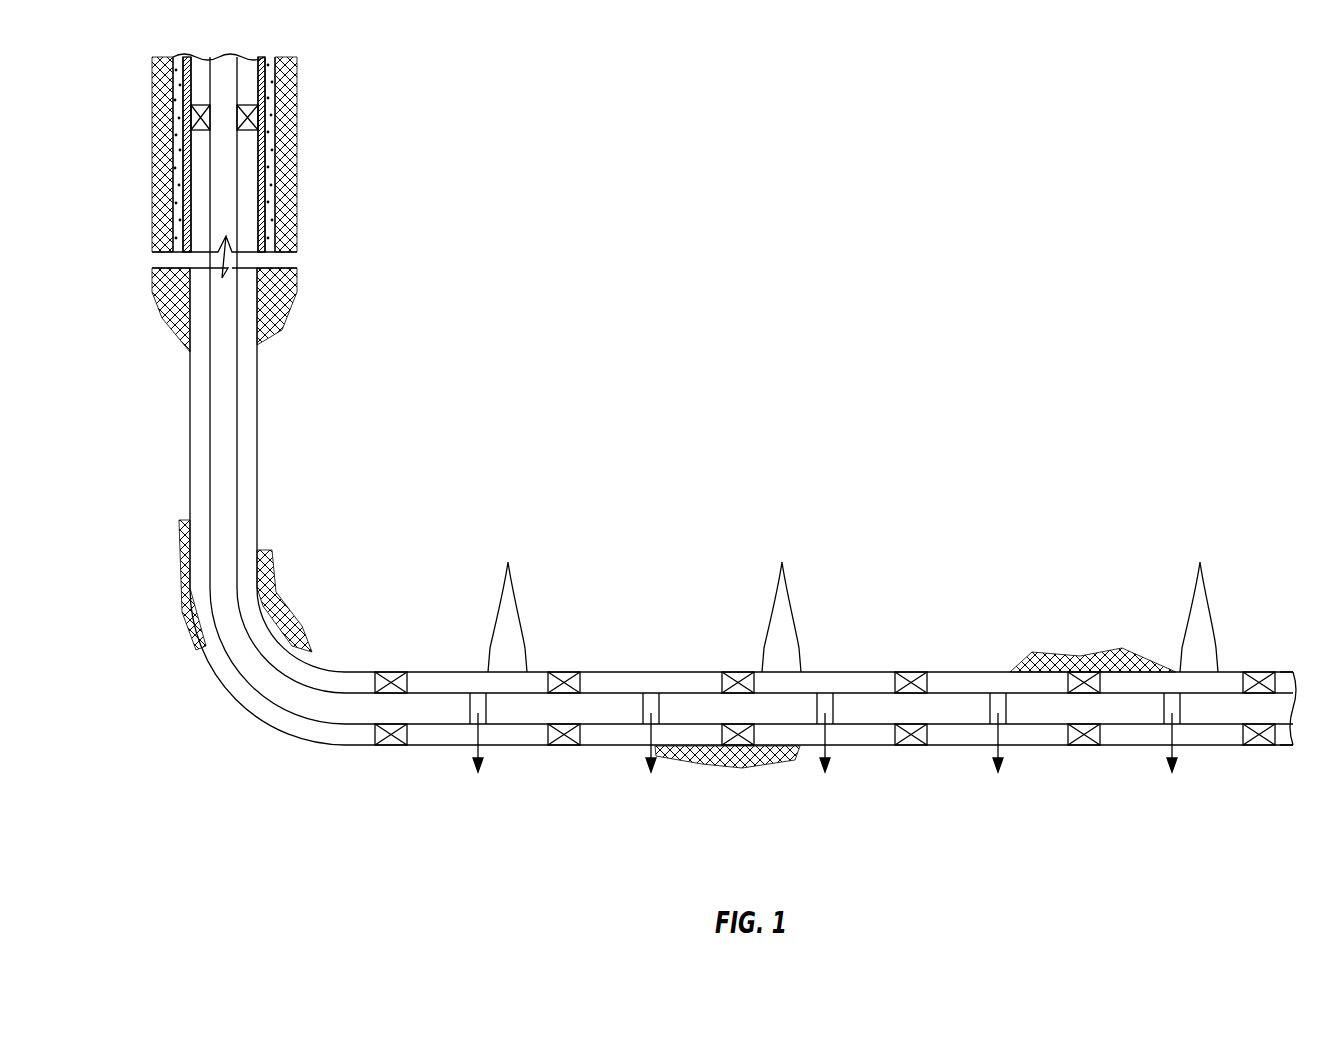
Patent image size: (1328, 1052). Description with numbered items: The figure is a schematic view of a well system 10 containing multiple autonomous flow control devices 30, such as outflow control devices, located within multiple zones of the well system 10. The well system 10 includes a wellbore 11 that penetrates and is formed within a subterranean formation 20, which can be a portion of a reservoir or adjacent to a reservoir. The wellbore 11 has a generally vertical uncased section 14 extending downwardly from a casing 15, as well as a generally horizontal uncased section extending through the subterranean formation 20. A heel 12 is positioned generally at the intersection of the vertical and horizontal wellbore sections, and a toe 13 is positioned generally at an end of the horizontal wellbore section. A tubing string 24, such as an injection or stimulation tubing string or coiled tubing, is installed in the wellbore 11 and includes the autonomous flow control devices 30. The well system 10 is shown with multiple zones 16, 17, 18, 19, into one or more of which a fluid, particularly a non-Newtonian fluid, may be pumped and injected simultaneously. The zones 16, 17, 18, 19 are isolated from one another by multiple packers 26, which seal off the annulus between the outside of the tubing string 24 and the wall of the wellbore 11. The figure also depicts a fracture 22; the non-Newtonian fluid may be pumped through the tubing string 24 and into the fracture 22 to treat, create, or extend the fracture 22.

The well system 10 is at (471, 280).
The wellbore 11 is at (257, 405).
The heel 12 is at (216, 716).
The toe 13 is at (1286, 652).
The vertical uncased section 14 is at (258, 358).
The casing 15 is at (267, 112).
The zone 16 is at (458, 795).
The zone 17 is at (632, 795).
The zone 18 is at (808, 795).
The zone 19 is at (981, 795).
The subterranean formation 20 is at (717, 586).
The fracture 22 is at (512, 580).
The tubing string 24 is at (246, 457).
The packers 26 is at (392, 747).
The autonomous flow control devices 30 is at (477, 693).